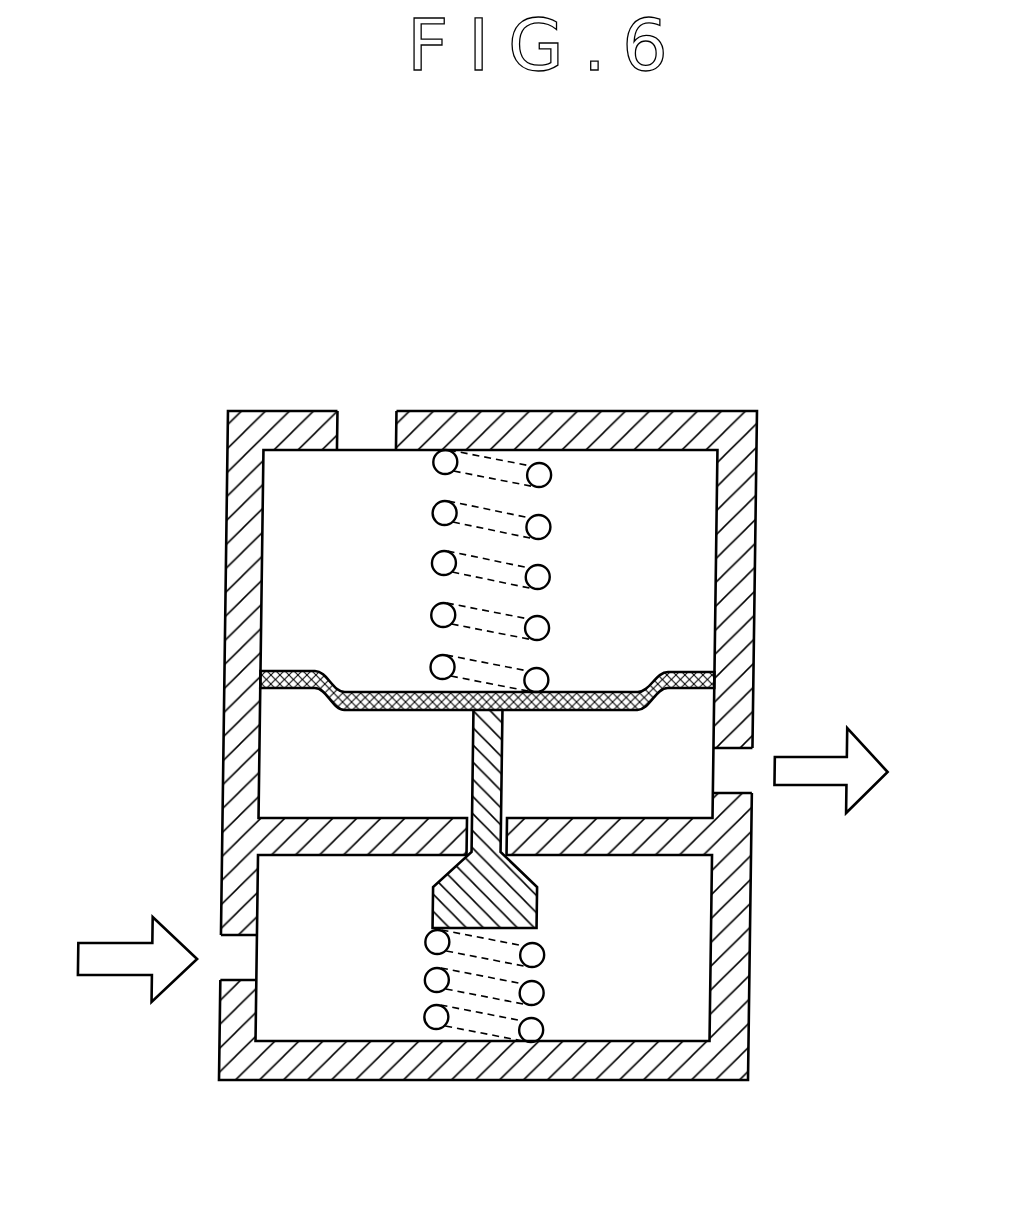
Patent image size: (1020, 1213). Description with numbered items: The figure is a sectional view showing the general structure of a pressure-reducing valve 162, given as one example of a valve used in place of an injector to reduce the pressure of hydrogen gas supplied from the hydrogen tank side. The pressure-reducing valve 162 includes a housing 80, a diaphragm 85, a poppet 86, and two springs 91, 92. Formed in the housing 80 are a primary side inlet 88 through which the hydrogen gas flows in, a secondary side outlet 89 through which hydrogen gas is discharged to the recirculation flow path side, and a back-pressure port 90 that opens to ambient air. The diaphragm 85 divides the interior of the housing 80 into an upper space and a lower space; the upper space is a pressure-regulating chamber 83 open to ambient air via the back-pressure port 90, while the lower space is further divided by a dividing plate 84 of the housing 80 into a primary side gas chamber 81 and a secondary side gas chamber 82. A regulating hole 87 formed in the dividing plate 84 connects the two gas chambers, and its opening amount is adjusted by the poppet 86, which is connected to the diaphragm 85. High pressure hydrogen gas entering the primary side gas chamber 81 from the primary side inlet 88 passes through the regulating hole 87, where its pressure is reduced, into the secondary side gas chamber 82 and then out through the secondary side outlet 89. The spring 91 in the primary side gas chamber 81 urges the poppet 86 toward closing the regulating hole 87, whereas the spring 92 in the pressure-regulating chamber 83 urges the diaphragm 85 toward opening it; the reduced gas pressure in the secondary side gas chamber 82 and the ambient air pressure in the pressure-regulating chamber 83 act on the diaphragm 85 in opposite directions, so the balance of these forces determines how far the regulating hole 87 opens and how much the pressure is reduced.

The pressure-reducing valve 162 is at (732, 371).
The housing 80 is at (640, 1081).
The primary side gas chamber 81 is at (317, 962).
The secondary side gas chamber 82 is at (322, 782).
The pressure-regulating chamber 83 is at (305, 575).
The dividing plate 84 is at (658, 857).
The diaphragm 85 is at (632, 690).
The poppet 86 is at (539, 907).
The regulating hole 87 is at (511, 802).
The primary side inlet 88 is at (230, 967).
The secondary side outlet 89 is at (733, 782).
The back-pressure port 90 is at (359, 430).
The spring 91 is at (543, 988).
The spring 92 is at (545, 566).